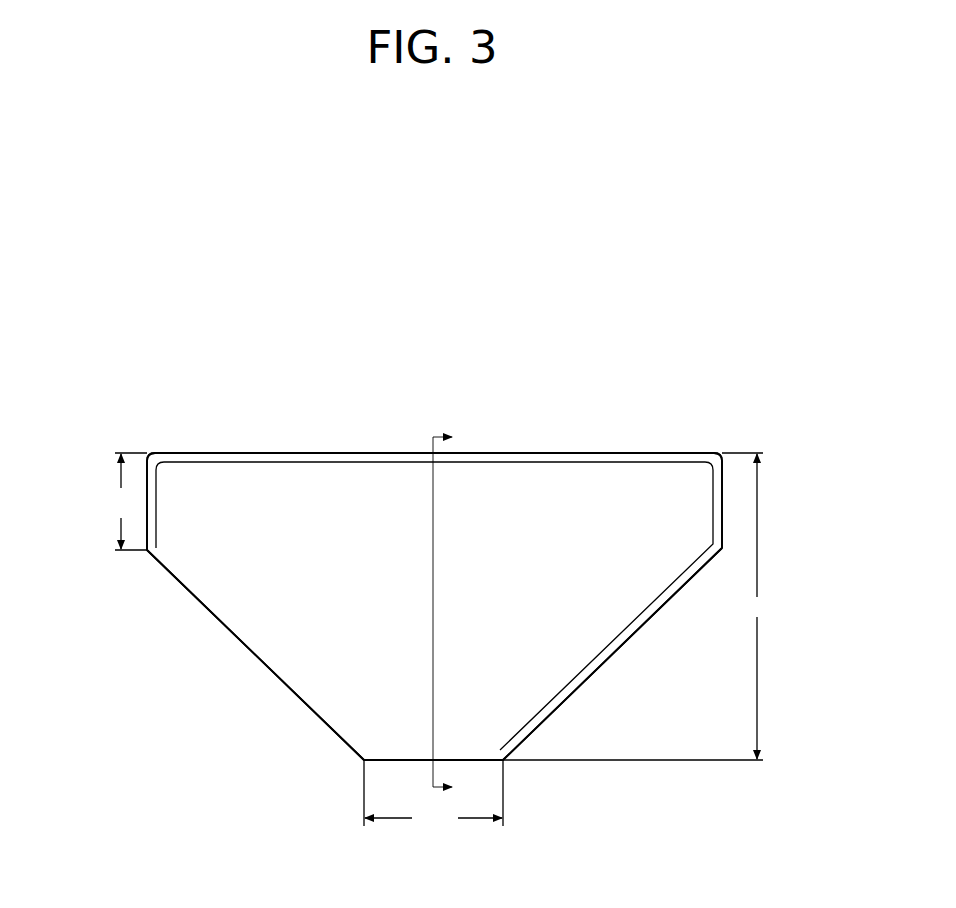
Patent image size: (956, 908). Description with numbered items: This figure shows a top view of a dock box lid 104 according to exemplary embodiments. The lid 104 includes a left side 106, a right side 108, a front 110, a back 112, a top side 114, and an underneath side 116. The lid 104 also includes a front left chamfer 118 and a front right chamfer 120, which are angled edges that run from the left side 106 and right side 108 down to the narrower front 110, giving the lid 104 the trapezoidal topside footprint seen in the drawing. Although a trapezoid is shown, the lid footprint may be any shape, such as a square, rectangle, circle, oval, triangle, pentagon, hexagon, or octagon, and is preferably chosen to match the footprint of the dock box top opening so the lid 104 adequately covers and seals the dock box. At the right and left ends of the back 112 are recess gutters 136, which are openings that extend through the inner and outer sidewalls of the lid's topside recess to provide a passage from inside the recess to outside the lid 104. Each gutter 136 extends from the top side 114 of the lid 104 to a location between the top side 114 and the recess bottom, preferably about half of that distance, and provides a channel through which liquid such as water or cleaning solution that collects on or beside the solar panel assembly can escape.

The dock box lid 104 is at (586, 252).
The left side 106 is at (147, 491).
The right side 108 is at (724, 503).
The front 110 is at (393, 760).
The back 112 is at (348, 450).
The top side 114 is at (352, 608).
The underneath side 116 is at (562, 368).
The front left chamfer 118 is at (221, 655).
The front right chamfer 120 is at (649, 656).
The recess gutter 136 is at (153, 450).